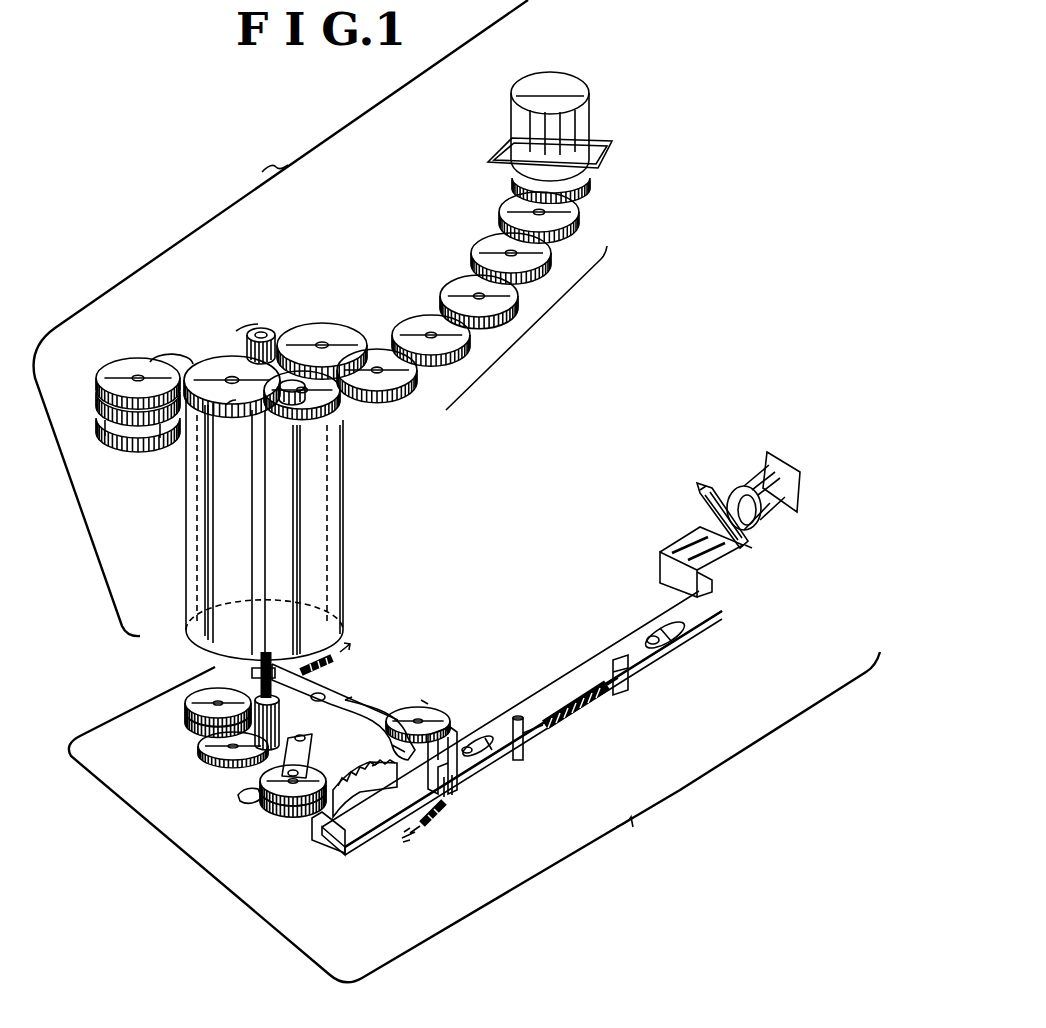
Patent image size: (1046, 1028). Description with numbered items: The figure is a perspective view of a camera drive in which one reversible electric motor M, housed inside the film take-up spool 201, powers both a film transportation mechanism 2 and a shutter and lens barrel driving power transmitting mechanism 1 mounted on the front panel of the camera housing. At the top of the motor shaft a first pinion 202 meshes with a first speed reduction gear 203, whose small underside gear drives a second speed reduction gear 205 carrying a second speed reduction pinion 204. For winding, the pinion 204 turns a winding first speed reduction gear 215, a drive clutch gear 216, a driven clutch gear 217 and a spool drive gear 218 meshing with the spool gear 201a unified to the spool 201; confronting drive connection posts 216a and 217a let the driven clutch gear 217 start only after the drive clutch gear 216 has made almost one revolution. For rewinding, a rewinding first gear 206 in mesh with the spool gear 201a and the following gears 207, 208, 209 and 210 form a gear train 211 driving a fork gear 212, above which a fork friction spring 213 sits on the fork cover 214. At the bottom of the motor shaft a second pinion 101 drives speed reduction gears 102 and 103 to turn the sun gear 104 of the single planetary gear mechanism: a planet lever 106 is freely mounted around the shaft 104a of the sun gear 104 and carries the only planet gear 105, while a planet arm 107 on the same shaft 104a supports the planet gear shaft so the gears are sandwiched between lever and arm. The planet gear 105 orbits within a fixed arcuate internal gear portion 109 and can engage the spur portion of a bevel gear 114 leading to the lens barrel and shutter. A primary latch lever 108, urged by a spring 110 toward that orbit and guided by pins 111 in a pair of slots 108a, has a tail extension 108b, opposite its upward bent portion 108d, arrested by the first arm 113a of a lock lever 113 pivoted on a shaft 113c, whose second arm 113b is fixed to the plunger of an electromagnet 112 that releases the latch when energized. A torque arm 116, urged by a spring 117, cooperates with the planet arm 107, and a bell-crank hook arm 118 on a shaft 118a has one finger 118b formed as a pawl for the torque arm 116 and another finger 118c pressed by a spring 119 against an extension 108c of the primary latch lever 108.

The shutter and lens barrel driving power transmitting mechanism 1 is at (474, 817).
The film transportation mechanism 2 is at (281, 318).
The electric motor M is at (236, 331).
The second pinion 101 is at (248, 752).
The speed reduction gear 102 is at (200, 714).
The speed reduction gear 103 is at (212, 751).
The sun gear 104 is at (340, 735).
The shaft of the sun gear 104a is at (345, 700).
The planet gear 105 is at (290, 810).
The planet lever 106 is at (383, 722).
The planet arm 107 is at (248, 803).
The primary latch lever 108 is at (354, 840).
The slots 108a is at (673, 647).
The extension 108b is at (712, 585).
The extension 108c is at (442, 818).
The upward bent portion 108d is at (330, 845).
The arcuate internal gear portion 109 is at (372, 815).
The spring 110 is at (570, 713).
The guide pins 111 is at (657, 642).
The electromagnet 112 is at (777, 512).
The lock lever 113 is at (716, 495).
The first arm 113a is at (685, 550).
The second arm 113b is at (700, 510).
The shaft 113c is at (750, 548).
The bevel gear 114 is at (446, 730).
The torque arm 116 is at (322, 682).
The spring 117 is at (343, 650).
The hook arm 118 is at (452, 773).
The shaft 118a is at (421, 700).
The finger 118b is at (372, 766).
The finger 118c is at (447, 788).
The spring 119 is at (418, 836).
The spool 201 is at (338, 517).
The spool gear 201a is at (215, 358).
The first pinion 202 is at (260, 328).
The first speed reduction gear 203 is at (321, 333).
The second speed reduction pinion 204 is at (312, 418).
The second speed reduction gear 205 is at (318, 428).
The rewinding first gear 206 is at (380, 350).
The gear 207 is at (420, 315).
The gear 208 is at (462, 282).
The gear 209 is at (485, 243).
The gear 210 is at (508, 205).
The gear train 211 is at (520, 335).
The fork gear 212 is at (585, 195).
The fork friction spring 213 is at (600, 165).
The fork cover 214 is at (556, 82).
The winding first speed reduction gear 215 is at (230, 405).
The drive clutch gear 216 is at (130, 365).
The drive connection post 216a is at (110, 446).
The driven clutch gear 217 is at (130, 450).
The drive connection post 217a is at (142, 450).
The spool drive gear 218 is at (164, 356).